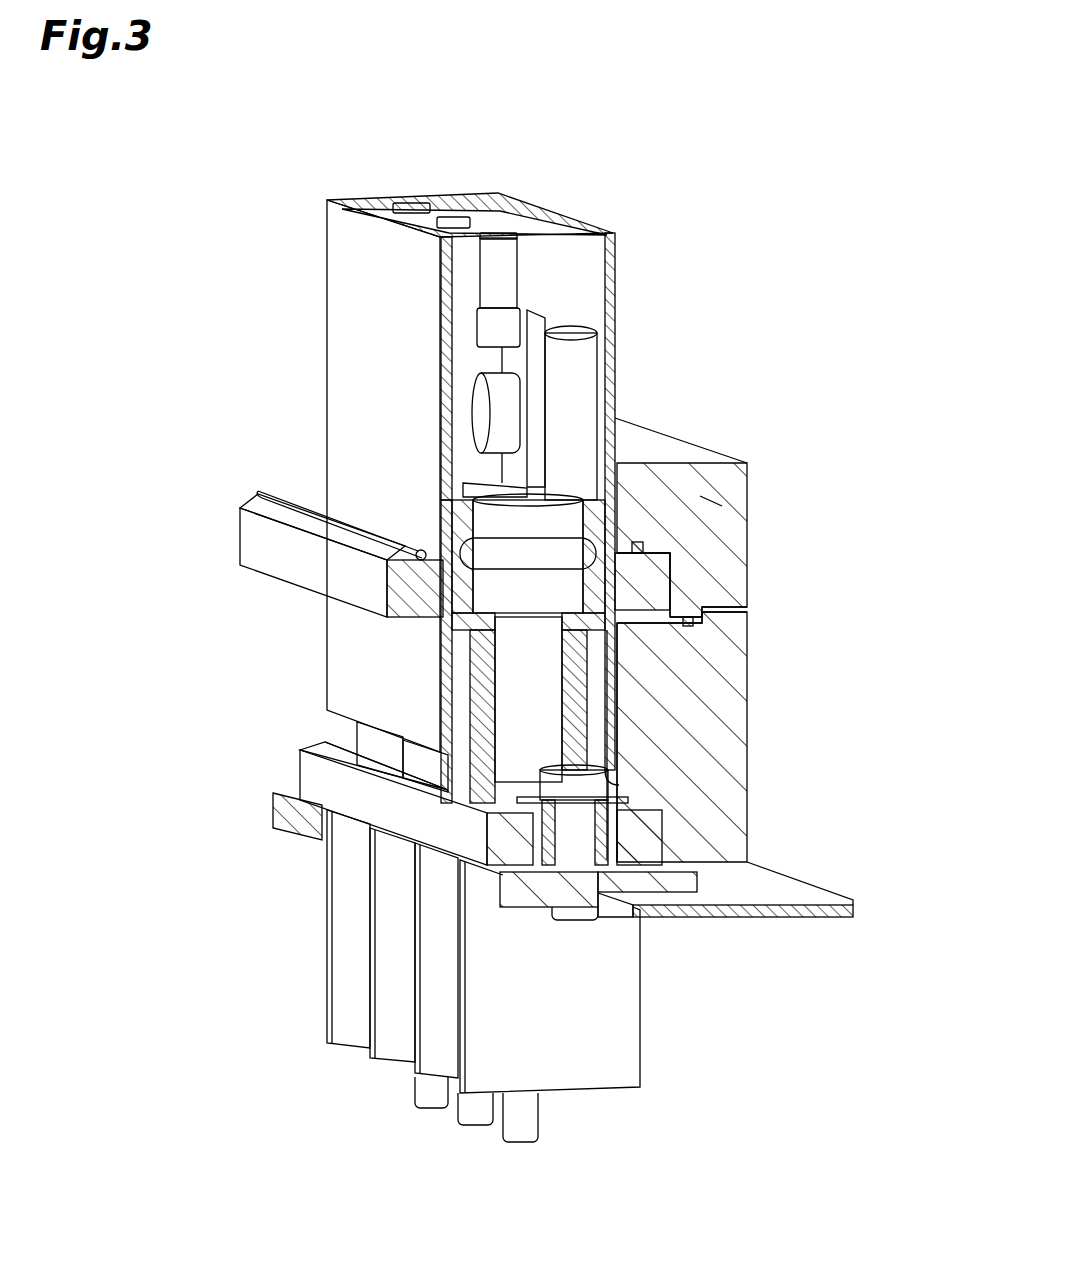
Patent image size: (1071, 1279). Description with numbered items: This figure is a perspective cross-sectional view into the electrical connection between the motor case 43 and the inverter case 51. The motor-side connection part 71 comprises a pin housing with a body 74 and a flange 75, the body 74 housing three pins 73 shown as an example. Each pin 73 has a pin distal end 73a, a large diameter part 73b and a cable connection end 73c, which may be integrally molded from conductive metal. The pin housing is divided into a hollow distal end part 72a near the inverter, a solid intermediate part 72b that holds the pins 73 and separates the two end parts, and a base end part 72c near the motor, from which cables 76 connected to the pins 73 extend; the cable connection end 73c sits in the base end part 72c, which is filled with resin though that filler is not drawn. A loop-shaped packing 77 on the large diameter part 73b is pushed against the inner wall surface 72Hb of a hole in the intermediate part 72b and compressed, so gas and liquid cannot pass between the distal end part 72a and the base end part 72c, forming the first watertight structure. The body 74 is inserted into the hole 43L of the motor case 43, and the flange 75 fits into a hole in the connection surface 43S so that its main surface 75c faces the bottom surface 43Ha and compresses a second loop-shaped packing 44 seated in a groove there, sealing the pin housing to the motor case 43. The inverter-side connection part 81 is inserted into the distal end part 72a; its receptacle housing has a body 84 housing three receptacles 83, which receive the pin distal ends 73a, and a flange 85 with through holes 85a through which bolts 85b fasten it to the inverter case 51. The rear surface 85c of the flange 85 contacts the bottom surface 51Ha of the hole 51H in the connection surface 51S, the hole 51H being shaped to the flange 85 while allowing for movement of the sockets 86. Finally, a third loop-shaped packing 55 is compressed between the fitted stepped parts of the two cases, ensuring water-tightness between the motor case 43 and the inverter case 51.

The motor-side connection part 71 is at (284, 216).
The distal end part 72a is at (447, 657).
The intermediate part 72b is at (450, 503).
The base end part 72c is at (611, 233).
The inner wall surface 72Hb is at (468, 600).
The pin 73 is at (534, 477).
The pin distal end 73a is at (618, 785).
The large diameter part 73b is at (447, 520).
The cable connection end 73c is at (560, 330).
The body 74 is at (325, 297).
The flange 75 is at (240, 535).
The main surface 75c is at (712, 505).
The cables 76 is at (412, 203).
The packing 77 is at (420, 553).
The motor case 43 is at (767, 491).
The bottom surface 43Ha is at (672, 572).
The hole 43L is at (605, 470).
The connection surface 43S is at (703, 620).
The packing 44 is at (690, 470).
The inverter case 51 is at (729, 777).
The hole 51H is at (612, 753).
The bottom surface 51Ha is at (720, 880).
The connection surface 51S is at (722, 606).
The packing 55 is at (690, 625).
The inverter-side connection part 81 is at (288, 1025).
The receptacle 83 is at (505, 690).
The body 84 is at (325, 982).
The flange 85 is at (495, 879).
The through holes 85a is at (635, 912).
The bolts 85b is at (660, 812).
The rear surface 85c is at (303, 813).
The sockets 86 is at (618, 820).